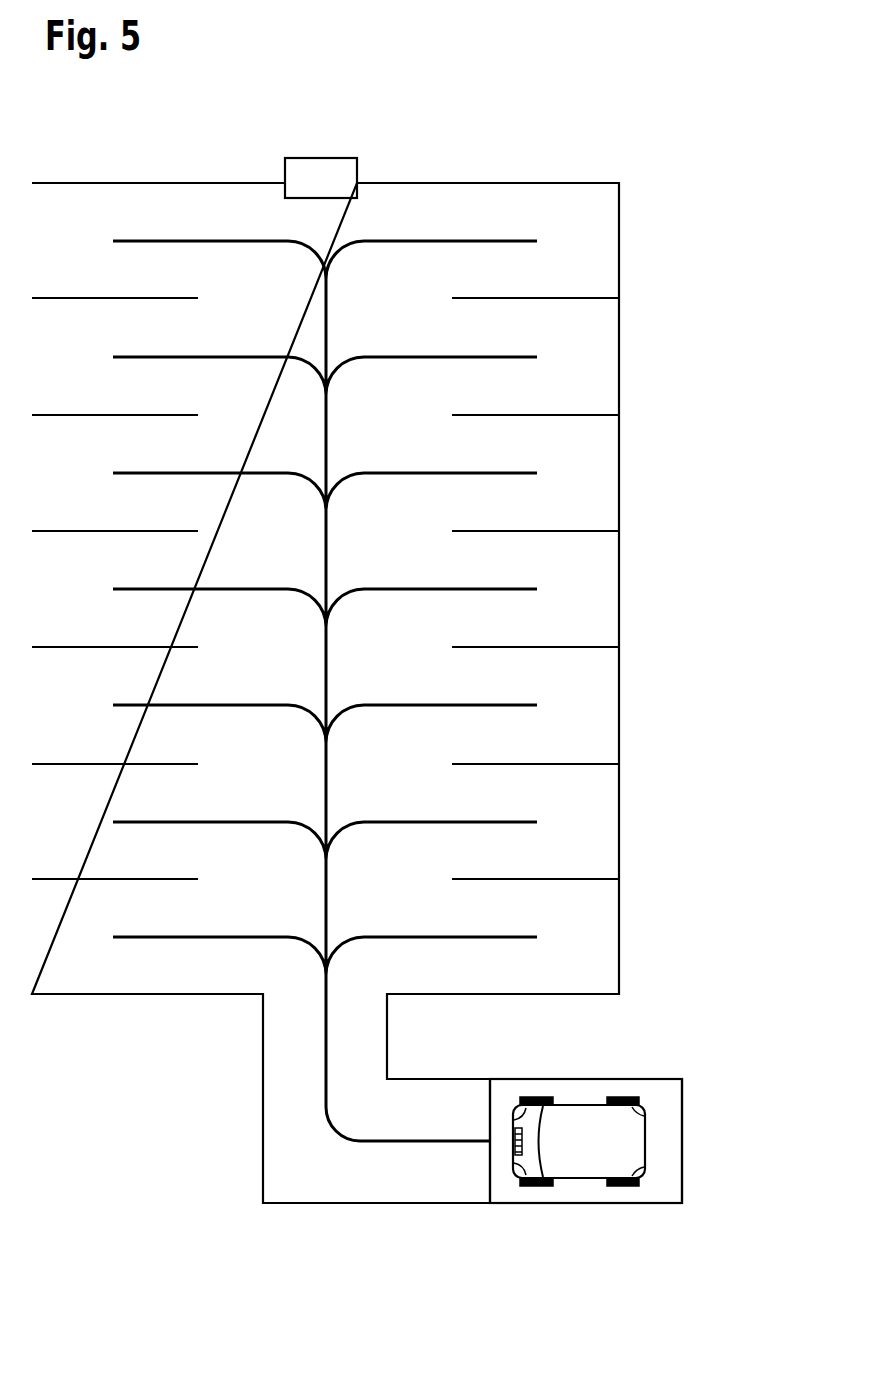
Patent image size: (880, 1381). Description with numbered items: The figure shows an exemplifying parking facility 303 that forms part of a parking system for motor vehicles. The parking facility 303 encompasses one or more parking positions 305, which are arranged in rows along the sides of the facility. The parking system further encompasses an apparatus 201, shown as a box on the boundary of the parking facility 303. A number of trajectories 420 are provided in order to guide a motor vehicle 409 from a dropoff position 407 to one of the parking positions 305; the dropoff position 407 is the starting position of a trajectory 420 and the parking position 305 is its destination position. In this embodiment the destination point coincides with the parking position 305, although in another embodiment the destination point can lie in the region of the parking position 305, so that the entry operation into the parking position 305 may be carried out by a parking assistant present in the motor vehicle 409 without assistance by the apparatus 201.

The apparatus 201 is at (322, 157).
The parking facility 303 is at (527, 182).
The parking positions 305 is at (568, 240).
The dropoff position 407 is at (657, 1142).
The motor vehicle 409 is at (583, 1104).
The trajectories 420 is at (437, 239).